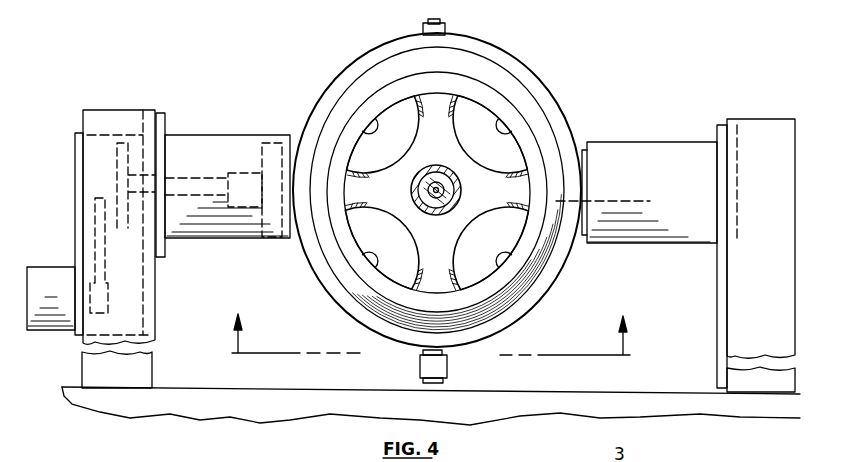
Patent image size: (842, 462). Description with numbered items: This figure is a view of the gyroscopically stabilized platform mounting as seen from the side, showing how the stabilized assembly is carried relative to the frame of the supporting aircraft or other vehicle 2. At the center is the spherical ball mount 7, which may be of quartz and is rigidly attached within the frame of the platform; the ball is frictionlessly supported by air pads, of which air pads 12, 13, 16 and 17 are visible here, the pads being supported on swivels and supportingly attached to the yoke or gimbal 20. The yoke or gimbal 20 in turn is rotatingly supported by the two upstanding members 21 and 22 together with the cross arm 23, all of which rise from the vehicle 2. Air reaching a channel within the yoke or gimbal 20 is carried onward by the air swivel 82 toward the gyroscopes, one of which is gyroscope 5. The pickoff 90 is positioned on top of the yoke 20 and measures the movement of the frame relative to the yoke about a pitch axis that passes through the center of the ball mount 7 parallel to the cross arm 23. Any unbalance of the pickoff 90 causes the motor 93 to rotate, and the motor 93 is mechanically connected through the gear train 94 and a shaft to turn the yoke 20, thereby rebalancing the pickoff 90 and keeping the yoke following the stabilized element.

The vehicle 2 is at (658, 402).
The gyroscope 5 is at (244, 377).
The ball mount 7 is at (440, 272).
The air pad 12 is at (492, 218).
The air pad 13 is at (405, 240).
The air pad 16 is at (378, 152).
The air pad 17 is at (509, 160).
The yoke or gimbal 20 is at (527, 75).
The upstanding member 21 is at (753, 125).
The upstanding member 22 is at (103, 117).
The cross arm 23 is at (620, 153).
The air swivel 82 is at (448, 367).
The pickoff 90 is at (450, 26).
The motor 93 is at (60, 272).
The gear train 94 is at (117, 162).